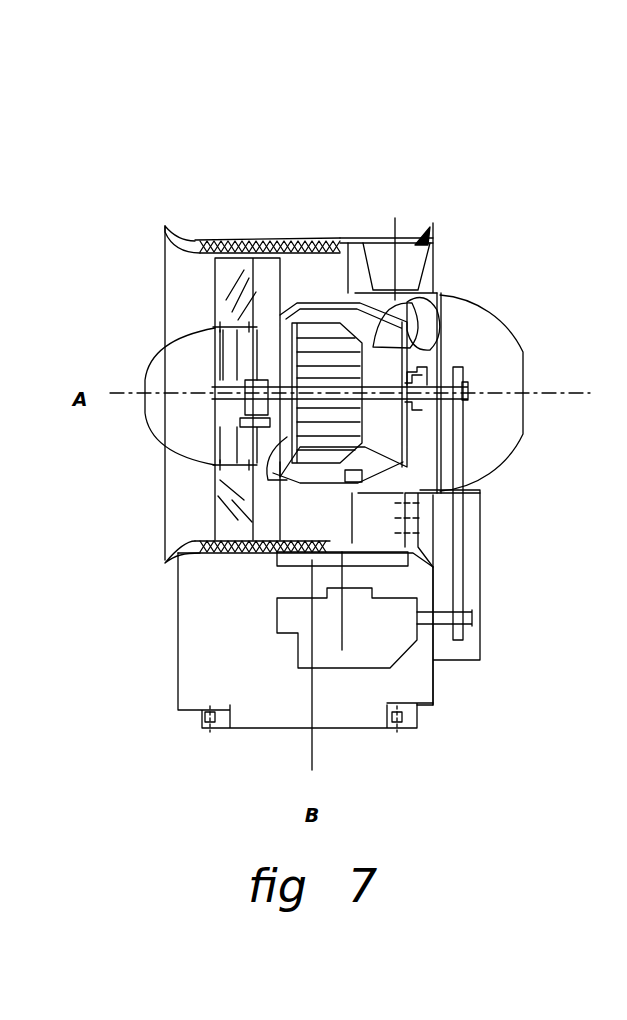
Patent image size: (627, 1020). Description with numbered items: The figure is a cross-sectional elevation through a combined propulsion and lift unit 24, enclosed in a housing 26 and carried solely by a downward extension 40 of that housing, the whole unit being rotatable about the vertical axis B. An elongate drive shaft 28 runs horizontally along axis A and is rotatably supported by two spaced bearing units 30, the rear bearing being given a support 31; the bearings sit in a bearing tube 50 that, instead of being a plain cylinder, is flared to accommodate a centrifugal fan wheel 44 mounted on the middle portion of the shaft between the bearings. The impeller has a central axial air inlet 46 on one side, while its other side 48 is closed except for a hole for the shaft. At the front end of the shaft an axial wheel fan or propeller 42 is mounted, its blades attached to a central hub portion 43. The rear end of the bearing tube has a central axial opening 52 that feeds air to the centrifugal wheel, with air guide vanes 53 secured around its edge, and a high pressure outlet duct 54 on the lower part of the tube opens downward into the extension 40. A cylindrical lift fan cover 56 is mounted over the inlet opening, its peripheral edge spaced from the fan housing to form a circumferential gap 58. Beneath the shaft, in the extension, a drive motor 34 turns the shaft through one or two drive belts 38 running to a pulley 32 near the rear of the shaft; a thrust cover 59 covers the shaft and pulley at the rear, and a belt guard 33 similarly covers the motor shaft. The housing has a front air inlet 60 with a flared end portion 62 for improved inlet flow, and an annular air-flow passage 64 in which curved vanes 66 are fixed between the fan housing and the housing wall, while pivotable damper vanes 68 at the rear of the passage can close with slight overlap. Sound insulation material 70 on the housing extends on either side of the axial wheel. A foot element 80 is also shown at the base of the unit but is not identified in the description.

The combined propulsion and lift unit 24 is at (305, 140).
The housing 26 is at (356, 239).
The drive shaft 28 is at (480, 384).
The bearing unit 30 is at (241, 407).
The support 31 is at (429, 505).
The pulley 32 is at (464, 358).
The belt guard 33 is at (491, 588).
The drive motor 34 is at (299, 645).
The drive belt 38 is at (464, 553).
The downward extension of housing 40 is at (177, 632).
The axial wheel fan or propeller 42 is at (213, 299).
The central hub portion 43 is at (146, 362).
The centrifugal fan wheel 44 is at (329, 461).
The air inlet 46 is at (396, 428).
The closed side 48 is at (273, 477).
The bearing tube 50 is at (334, 300).
The central axial opening 52 is at (373, 430).
The air guide vane 53 is at (424, 298).
The high pressure outlet duct 54 is at (276, 568).
The lift fan cover 56 is at (448, 306).
The circumferential gap 58 is at (351, 489).
The thrust cover 59 is at (527, 413).
The air inlet 60 is at (136, 268).
The flared end portion 62 is at (163, 229).
The annular air-flow passage 64 is at (228, 399).
The curved vane 66 is at (302, 260).
The damper vane 68 is at (424, 241).
The sound insulation material 70 is at (240, 237).
The foot 80 is at (433, 722).